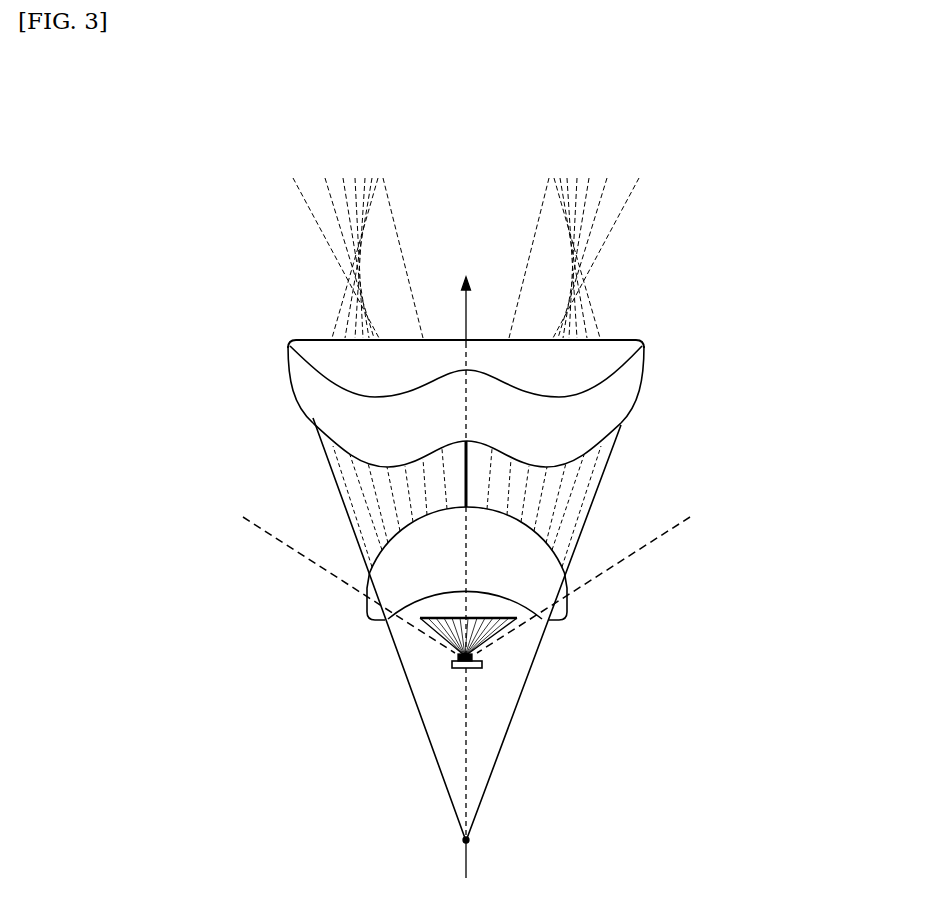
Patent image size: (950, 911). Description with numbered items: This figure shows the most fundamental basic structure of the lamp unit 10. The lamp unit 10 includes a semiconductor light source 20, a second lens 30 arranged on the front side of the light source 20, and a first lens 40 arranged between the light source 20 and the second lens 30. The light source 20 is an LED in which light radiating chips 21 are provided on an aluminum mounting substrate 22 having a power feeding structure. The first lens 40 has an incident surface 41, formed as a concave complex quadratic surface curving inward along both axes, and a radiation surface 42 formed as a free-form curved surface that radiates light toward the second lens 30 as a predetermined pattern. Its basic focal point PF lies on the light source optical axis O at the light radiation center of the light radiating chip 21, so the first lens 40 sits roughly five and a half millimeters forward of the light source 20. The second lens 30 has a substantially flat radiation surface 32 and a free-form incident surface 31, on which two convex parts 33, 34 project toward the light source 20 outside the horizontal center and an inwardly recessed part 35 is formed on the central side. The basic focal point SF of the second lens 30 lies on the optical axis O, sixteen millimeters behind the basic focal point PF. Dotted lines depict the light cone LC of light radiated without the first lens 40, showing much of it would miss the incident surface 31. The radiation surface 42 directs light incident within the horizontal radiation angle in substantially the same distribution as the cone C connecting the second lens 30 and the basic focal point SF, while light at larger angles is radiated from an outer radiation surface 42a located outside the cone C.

The lamp unit 10 is at (318, 84).
The light source 20 is at (313, 758).
The light radiating chip 21 is at (458, 657).
The mounting substrate 22 is at (452, 668).
The second lens 30 is at (278, 327).
The incident surface 31 is at (640, 418).
The radiation surface 32 is at (535, 330).
The convex part 33 is at (355, 443).
The convex part 34 is at (560, 450).
The inwardly recessed part 35 is at (460, 413).
The first lens 40 is at (336, 618).
The incident surface 41 is at (538, 640).
The radiation surface 42 is at (552, 523).
The outer radiation surface 42a is at (350, 573).
The light source optical axis O is at (465, 563).
The light cone LC is at (243, 519).
The basic focal point PF is at (462, 652).
The basic focal point SF is at (466, 841).
The cone C is at (502, 750).